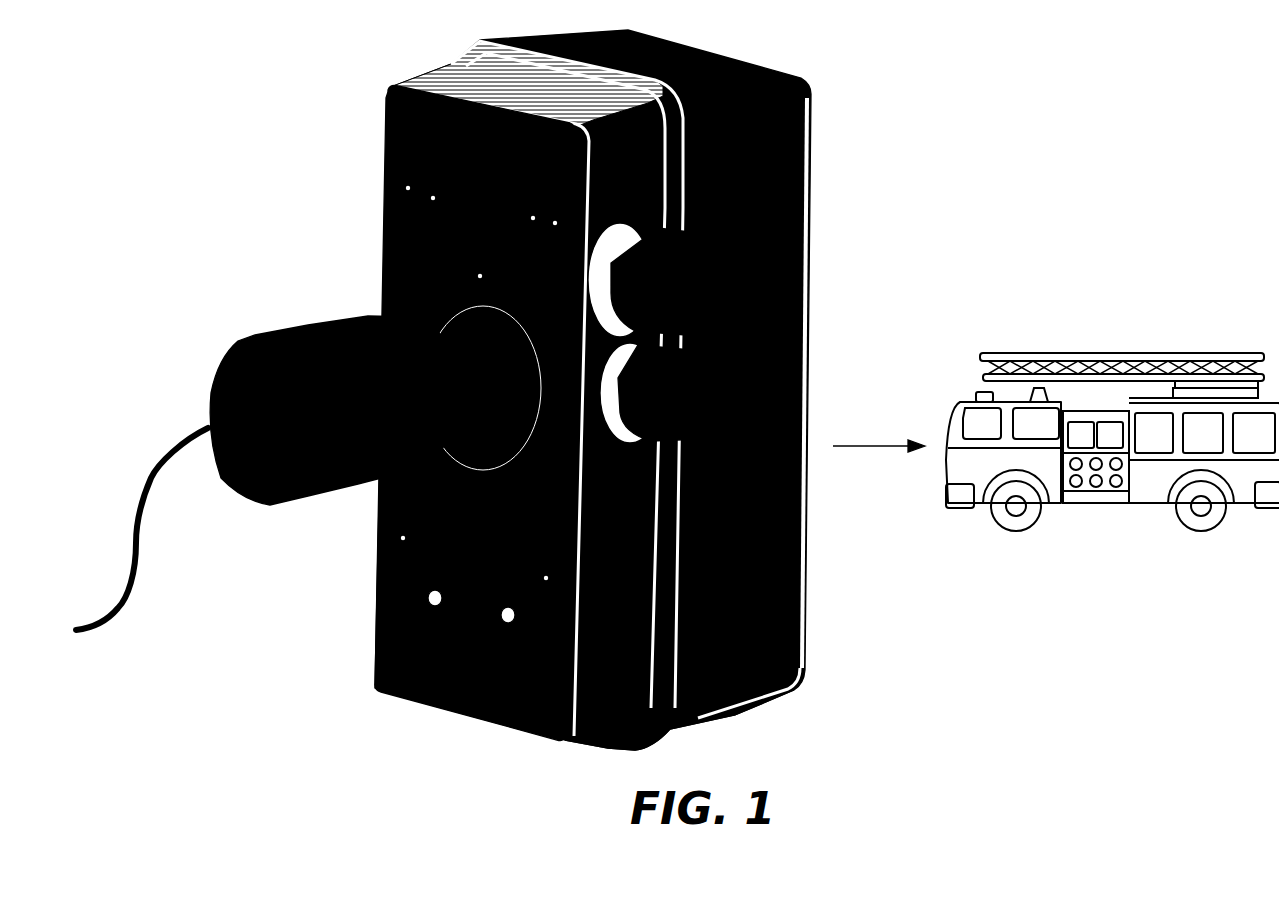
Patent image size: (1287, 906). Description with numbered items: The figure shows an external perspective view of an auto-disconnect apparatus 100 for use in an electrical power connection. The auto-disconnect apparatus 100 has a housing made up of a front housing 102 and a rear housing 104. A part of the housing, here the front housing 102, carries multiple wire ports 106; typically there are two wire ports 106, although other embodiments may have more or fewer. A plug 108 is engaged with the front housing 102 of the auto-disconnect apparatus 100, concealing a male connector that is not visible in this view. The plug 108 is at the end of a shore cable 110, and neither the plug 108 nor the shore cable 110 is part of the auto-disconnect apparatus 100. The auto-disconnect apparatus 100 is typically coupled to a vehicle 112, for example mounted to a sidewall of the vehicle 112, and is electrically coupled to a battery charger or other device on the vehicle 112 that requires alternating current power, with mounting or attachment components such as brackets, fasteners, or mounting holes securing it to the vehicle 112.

The auto-disconnect apparatus 100 is at (918, 97).
The front housing 102 is at (378, 145).
The rear housing 104 is at (797, 505).
The wire ports 106 is at (800, 380).
The plug 108 is at (335, 308).
The shore cable 110 is at (140, 468).
The vehicle 112 is at (1121, 345).